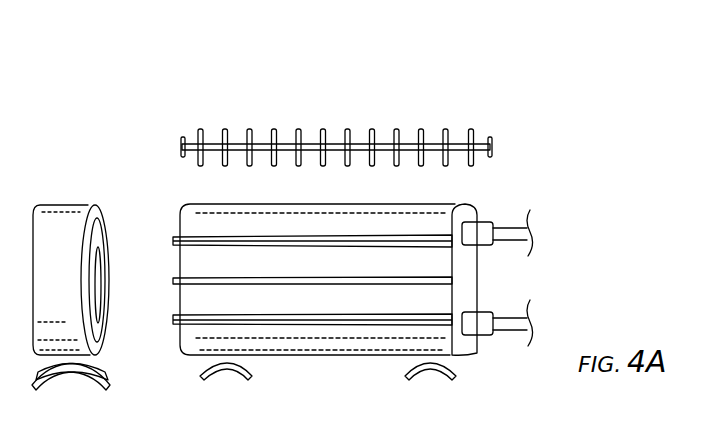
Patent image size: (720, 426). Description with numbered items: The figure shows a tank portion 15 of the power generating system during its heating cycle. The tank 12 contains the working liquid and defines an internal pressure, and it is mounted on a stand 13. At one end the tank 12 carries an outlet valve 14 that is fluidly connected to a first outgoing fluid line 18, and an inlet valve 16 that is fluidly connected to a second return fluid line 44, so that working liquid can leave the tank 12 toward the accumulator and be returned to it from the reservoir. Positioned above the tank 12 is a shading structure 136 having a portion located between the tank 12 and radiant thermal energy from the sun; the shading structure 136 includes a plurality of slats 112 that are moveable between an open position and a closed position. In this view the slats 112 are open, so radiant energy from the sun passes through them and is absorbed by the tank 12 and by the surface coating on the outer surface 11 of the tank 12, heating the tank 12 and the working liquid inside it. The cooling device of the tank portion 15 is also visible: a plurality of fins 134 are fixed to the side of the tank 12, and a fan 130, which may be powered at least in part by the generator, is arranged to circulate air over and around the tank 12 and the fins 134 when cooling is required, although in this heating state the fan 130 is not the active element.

The tank portion 15 is at (108, 110).
The fan 130 is at (70, 205).
The slats 112 is at (225, 130).
The shading structure 136 is at (352, 118).
The fins 134 is at (178, 236).
The tank 12 is at (311, 293).
The outer surface 11 is at (313, 342).
The stand 13 is at (240, 371).
The outlet valve 14 is at (482, 226).
The first outgoing fluid line 18 is at (522, 242).
The inlet valve 16 is at (478, 338).
The second return fluid line 44 is at (507, 334).